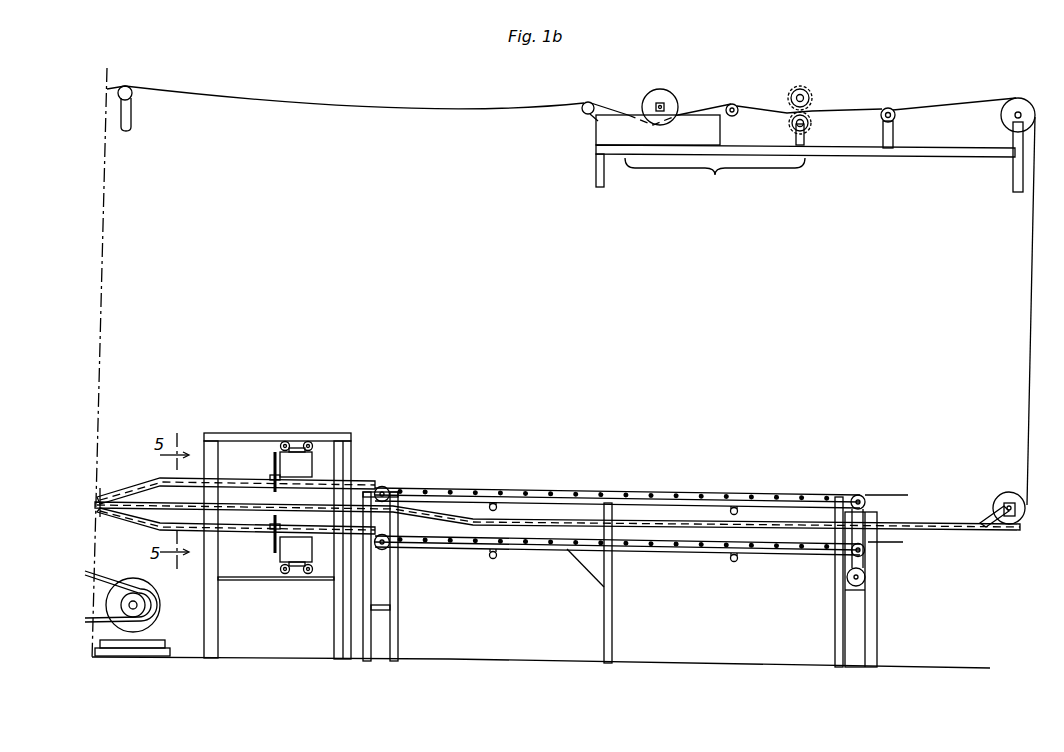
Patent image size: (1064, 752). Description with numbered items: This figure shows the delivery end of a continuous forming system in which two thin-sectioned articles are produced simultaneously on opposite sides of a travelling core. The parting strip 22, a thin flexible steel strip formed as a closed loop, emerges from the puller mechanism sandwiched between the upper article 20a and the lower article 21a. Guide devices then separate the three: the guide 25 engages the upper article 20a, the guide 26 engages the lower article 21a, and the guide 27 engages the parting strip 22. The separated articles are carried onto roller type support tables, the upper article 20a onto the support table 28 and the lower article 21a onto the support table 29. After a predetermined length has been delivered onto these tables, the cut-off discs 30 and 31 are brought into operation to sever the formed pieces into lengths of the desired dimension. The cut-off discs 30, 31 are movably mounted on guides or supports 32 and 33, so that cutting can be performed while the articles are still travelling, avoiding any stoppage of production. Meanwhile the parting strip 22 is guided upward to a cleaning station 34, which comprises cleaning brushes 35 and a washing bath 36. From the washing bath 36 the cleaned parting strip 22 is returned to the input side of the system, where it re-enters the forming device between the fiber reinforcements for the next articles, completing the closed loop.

The upper article 20a is at (888, 494).
The lower article 21a is at (903, 543).
The parting strip 22 is at (1028, 393).
The guide 25 is at (130, 486).
The guide 26 is at (143, 529).
The guide 27 is at (178, 505).
The roller type support table 28 is at (580, 491).
The roller type support table 29 is at (557, 546).
The cut-off disc 30 is at (275, 470).
The cut-off disc 31 is at (272, 546).
The guide or support 32 is at (284, 432).
The guide or support 33 is at (293, 576).
The cleaning station 34 is at (715, 176).
The cleaning brushes 35 is at (812, 96).
The washing bath 36 is at (612, 133).